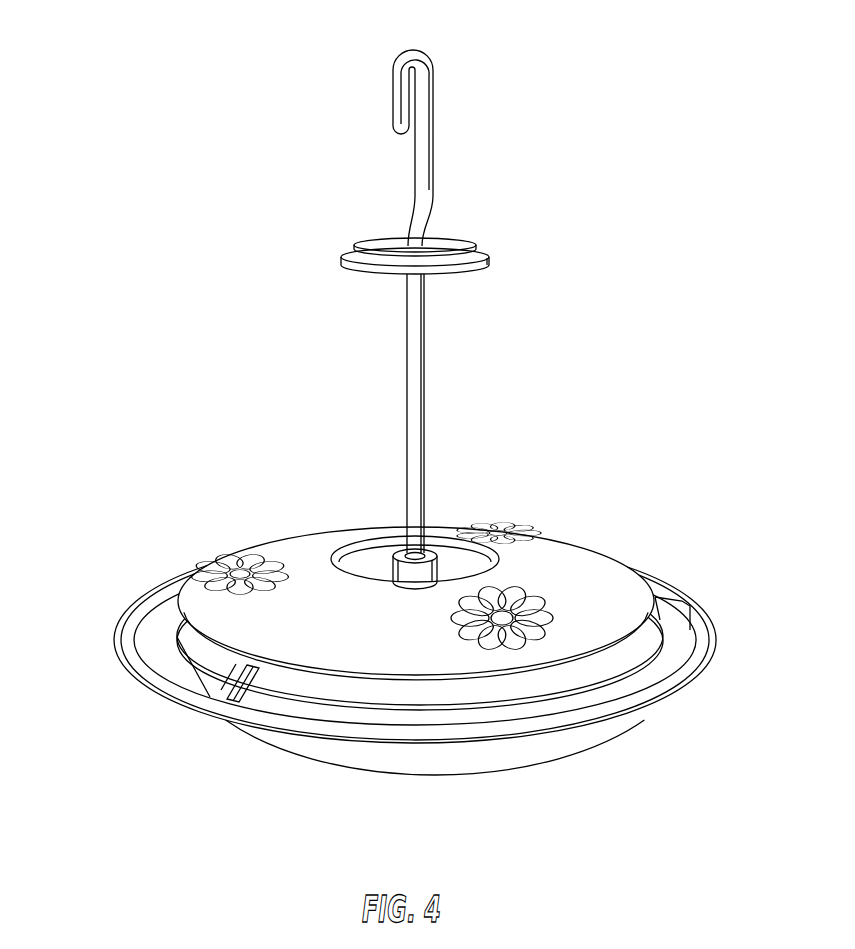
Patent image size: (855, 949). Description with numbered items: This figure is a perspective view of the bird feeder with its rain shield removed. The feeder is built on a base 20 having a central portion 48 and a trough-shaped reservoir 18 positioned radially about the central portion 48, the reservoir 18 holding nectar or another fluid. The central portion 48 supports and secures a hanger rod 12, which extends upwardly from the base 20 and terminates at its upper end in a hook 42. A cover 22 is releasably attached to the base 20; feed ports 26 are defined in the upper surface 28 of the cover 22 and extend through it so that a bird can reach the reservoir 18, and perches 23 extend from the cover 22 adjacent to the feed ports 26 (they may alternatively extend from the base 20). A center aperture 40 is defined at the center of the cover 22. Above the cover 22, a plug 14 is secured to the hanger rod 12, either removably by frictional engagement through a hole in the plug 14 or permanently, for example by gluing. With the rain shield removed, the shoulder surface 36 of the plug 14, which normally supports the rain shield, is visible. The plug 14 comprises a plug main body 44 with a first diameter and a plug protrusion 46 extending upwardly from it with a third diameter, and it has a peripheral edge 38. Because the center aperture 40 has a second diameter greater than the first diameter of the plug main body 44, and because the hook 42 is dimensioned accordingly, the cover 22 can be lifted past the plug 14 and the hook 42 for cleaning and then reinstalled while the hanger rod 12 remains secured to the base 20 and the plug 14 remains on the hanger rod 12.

The hanger rod 12 is at (426, 388).
The plug 14 is at (403, 259).
The reservoir 18 is at (362, 560).
The base 20 is at (283, 757).
The cover 22 is at (373, 582).
The perches 23 is at (114, 646).
The feed ports 26 is at (222, 562).
The upper surface 28 is at (216, 624).
The shoulder surface 36 is at (483, 256).
The peripheral edge 38 is at (489, 262).
The center aperture 40 is at (592, 553).
The hook 42 is at (430, 55).
The plug main body 44 is at (362, 272).
The plug protrusion 46 is at (449, 244).
The central portion 48 is at (447, 570).